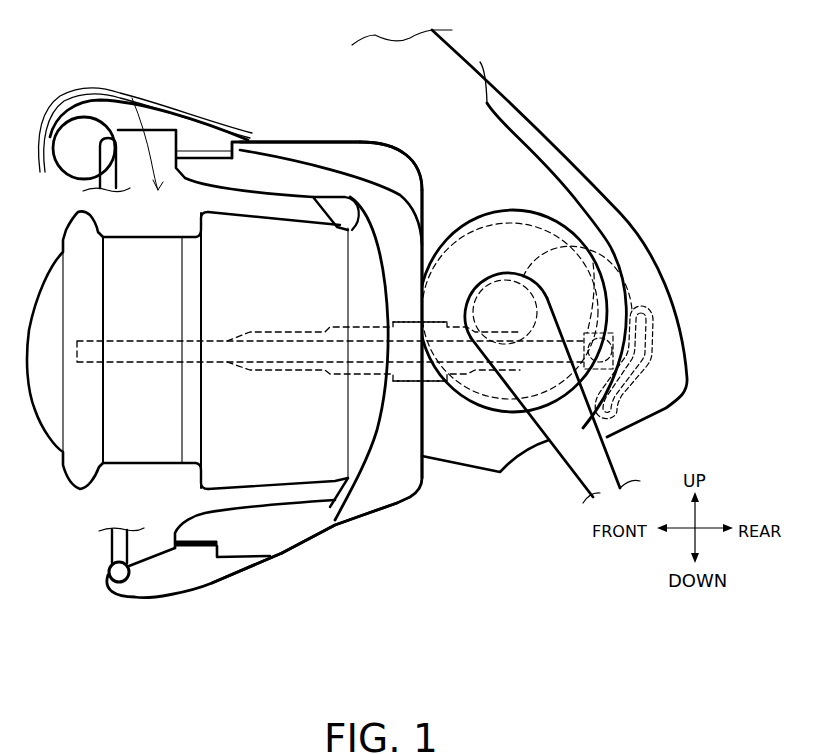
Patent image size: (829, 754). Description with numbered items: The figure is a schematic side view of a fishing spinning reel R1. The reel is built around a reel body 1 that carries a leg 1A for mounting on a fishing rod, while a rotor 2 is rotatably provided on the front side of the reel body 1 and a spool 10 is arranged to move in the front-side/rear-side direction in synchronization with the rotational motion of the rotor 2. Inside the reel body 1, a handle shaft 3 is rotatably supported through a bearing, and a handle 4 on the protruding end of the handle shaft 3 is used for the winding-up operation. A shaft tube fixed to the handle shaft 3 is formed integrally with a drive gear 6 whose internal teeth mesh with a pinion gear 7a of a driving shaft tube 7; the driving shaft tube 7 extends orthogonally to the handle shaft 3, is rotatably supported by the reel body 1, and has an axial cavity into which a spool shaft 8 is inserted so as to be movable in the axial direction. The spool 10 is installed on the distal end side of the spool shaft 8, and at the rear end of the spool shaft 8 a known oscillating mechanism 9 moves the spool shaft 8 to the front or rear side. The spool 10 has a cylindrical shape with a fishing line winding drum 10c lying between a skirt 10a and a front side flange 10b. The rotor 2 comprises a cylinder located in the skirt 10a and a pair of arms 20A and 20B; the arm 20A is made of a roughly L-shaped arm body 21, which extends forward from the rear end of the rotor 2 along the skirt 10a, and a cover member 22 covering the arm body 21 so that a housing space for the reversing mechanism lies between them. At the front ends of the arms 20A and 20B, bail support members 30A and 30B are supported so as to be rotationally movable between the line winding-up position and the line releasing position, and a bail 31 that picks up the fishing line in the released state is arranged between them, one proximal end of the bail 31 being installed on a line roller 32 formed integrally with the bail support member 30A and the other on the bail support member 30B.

The fishing spinning reel R1 is at (605, 108).
The reel body 1 is at (537, 182).
The leg 1A is at (460, 72).
The rotor 2 is at (310, 147).
The handle shaft 3 is at (582, 252).
The handle 4 is at (608, 461).
The drive gear 6 is at (607, 292).
The driving shaft tube 7 is at (305, 330).
The pinion gear 7a is at (400, 322).
The spool shaft 8 is at (288, 355).
The oscillating mechanism 9 is at (655, 353).
The spool 10 is at (137, 237).
The skirt 10a is at (237, 220).
The front side flange 10b is at (78, 212).
The fishing line winding drum 10c is at (114, 138).
The arm 20A is at (343, 142).
The arm 20B is at (333, 510).
The arm body 21 is at (363, 183).
The cover member 22 is at (363, 150).
The bail support member 30A is at (173, 107).
The bail support member 30B is at (187, 578).
The bail 31 is at (107, 163).
The line roller 32 is at (70, 130).